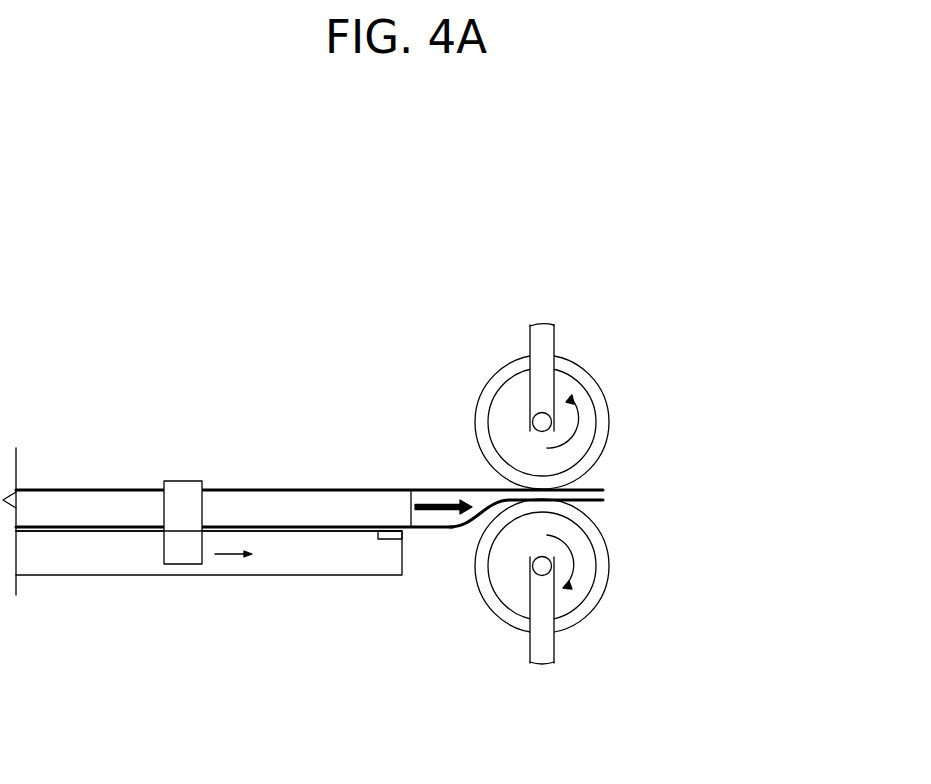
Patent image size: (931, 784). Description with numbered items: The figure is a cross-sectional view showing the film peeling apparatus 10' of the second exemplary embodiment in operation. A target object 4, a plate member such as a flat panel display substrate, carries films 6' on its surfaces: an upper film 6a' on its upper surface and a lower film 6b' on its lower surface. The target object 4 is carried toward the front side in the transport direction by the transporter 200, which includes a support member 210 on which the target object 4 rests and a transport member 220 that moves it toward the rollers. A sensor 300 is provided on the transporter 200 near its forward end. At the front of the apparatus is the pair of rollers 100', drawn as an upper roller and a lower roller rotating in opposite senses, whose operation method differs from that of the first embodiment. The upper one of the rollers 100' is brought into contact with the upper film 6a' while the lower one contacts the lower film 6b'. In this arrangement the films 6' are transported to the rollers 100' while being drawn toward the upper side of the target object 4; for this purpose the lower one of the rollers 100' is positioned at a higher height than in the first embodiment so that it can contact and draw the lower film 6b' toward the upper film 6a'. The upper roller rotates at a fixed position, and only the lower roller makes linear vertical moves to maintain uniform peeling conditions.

The film peeling apparatus 10' is at (209, 402).
The target object 4 is at (83, 497).
The films 6' is at (384, 440).
The upper film 6a' is at (234, 462).
The lower film 6b' is at (324, 462).
The pair of rollers 100' is at (616, 494).
The transporter 200 is at (187, 658).
The support member 210 is at (100, 554).
The transport member 220 is at (187, 553).
The sensor 300 is at (390, 534).